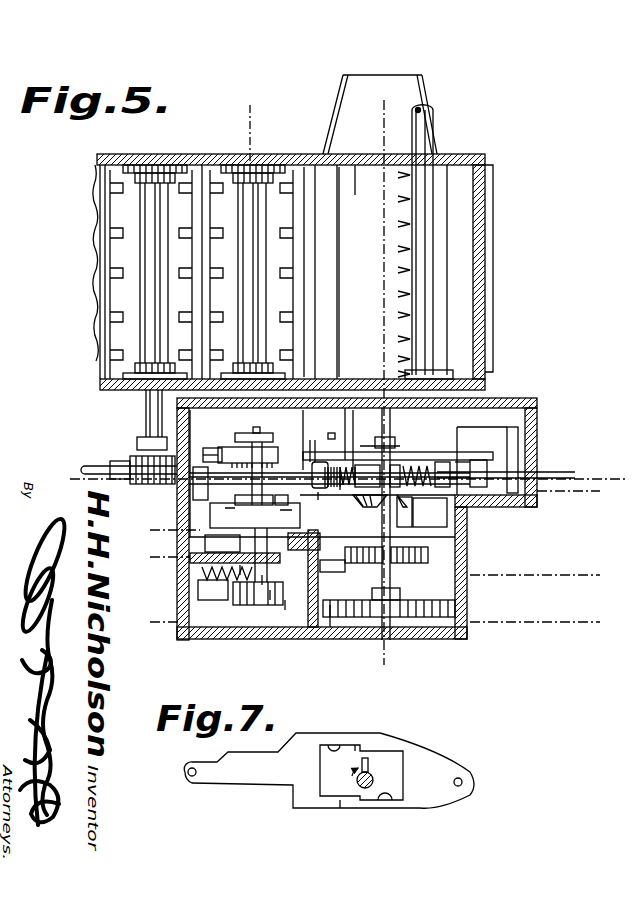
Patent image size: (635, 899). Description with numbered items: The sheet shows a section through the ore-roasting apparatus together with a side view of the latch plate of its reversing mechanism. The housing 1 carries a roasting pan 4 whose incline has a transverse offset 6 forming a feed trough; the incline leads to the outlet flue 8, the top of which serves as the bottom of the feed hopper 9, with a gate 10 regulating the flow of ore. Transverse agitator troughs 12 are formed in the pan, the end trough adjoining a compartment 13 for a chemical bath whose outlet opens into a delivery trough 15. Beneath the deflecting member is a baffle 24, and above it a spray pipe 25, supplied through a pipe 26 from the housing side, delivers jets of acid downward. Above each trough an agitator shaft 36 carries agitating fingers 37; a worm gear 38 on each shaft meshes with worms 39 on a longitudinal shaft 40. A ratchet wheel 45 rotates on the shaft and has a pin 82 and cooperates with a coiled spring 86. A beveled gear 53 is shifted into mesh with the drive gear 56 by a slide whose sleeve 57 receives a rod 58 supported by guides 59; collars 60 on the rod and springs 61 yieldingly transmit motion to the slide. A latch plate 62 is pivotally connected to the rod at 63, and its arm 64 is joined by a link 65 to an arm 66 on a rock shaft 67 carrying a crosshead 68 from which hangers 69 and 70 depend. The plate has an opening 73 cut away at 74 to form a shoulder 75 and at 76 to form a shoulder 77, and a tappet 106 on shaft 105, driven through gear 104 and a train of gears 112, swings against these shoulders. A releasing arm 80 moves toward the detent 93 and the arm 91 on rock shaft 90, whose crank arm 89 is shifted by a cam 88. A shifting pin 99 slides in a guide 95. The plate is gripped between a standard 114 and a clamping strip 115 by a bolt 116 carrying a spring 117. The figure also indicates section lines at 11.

In FIG. 5, the housing 1 is at (485, 160).
In FIG. 5, the roasting pan 4 is at (98, 216).
In FIG. 5, the transverse offset 6 is at (142, 612).
In FIG. 5, the outlet flue 8 is at (392, 112).
In FIG. 5, the feed hopper 9 is at (76, 469).
In FIG. 5, the gate 10 is at (258, 112).
In FIG. 5, the section line 11 is at (150, 520).
In FIG. 5, the agitator troughs 12 is at (302, 206).
In FIG. 5, the compartment 13 is at (354, 272).
In FIG. 5, the delivery trough 15 is at (350, 88).
In FIG. 5, the baffle 24 is at (355, 182).
In FIG. 5, the spray pipe 25 is at (428, 236).
In FIG. 5, the pipe 26 is at (425, 122).
In FIG. 5, the agitator shaft 36 is at (252, 302).
In FIG. 5, the agitating fingers 37 is at (125, 294).
In FIG. 5, the worm gear 38 is at (127, 461).
In FIG. 5, the worms 39 is at (150, 456).
In FIG. 5, the longitudinal shaft 40 is at (95, 459).
In FIG. 5, the ratchet wheel 45 is at (255, 578).
In FIG. 5, the beveled gear 53 is at (430, 511).
In FIG. 5, the drive gear 56 is at (412, 508).
In FIG. 5, the sleeve 57 is at (390, 460).
In FIG. 5, the rod 58 is at (546, 471).
In FIG. 5, the guides 59 is at (520, 442).
In FIG. 5, the collars 60 is at (500, 525).
In FIG. 5, the springs 61 is at (510, 448).
In FIG. 5, the latch plate 62 is at (410, 473).
In FIG. 7, the latch plate 62 is at (450, 762).
In FIG. 5, the pivotal connection 63 is at (475, 474).
In FIG. 5, the arm 64 is at (329, 457).
In FIG. 7, the arm 64 is at (247, 768).
In FIG. 5, the link 65 is at (200, 447).
In FIG. 5, the arm 66 is at (236, 450).
In FIG. 5, the rock shaft 67 is at (258, 436).
In FIG. 5, the crosshead 68 is at (255, 516).
In FIG. 5, the hanger 69 is at (203, 535).
In FIG. 5, the hanger 70 is at (367, 520).
In FIG. 7, the opening 73 is at (380, 747).
In FIG. 7, the cut-away portion 74 is at (332, 745).
In FIG. 7, the shoulder 75 is at (360, 745).
In FIG. 7, the cut-away portion 76 is at (390, 800).
In FIG. 7, the shoulder 77 is at (355, 806).
In FIG. 5, the releasing arm 80 is at (290, 500).
In FIG. 5, the pin 82 is at (288, 600).
In FIG. 5, the coiled spring 86 is at (262, 575).
In FIG. 5, the cam 88 is at (270, 590).
In FIG. 5, the crank arm 89 is at (240, 565).
In FIG. 5, the rock shaft 90 is at (200, 592).
In FIG. 5, the arm 91 is at (205, 568).
In FIG. 5, the detent 93 is at (243, 569).
In FIG. 5, the guide 95 is at (330, 627).
In FIG. 5, the shifting pin 99 is at (335, 565).
In FIG. 5, the gear 104 is at (440, 614).
In FIG. 5, the shaft 105 is at (396, 615).
In FIG. 5, the tappet 106 is at (390, 452).
In FIG. 7, the tappet 106 is at (368, 770).
In FIG. 5, the train of gears 112 is at (428, 562).
In FIG. 5, the standard 114 is at (336, 470).
In FIG. 5, the clamping strip 115 is at (322, 492).
In FIG. 5, the bolt 116 is at (344, 408).
In FIG. 5, the spring 117 is at (361, 490).